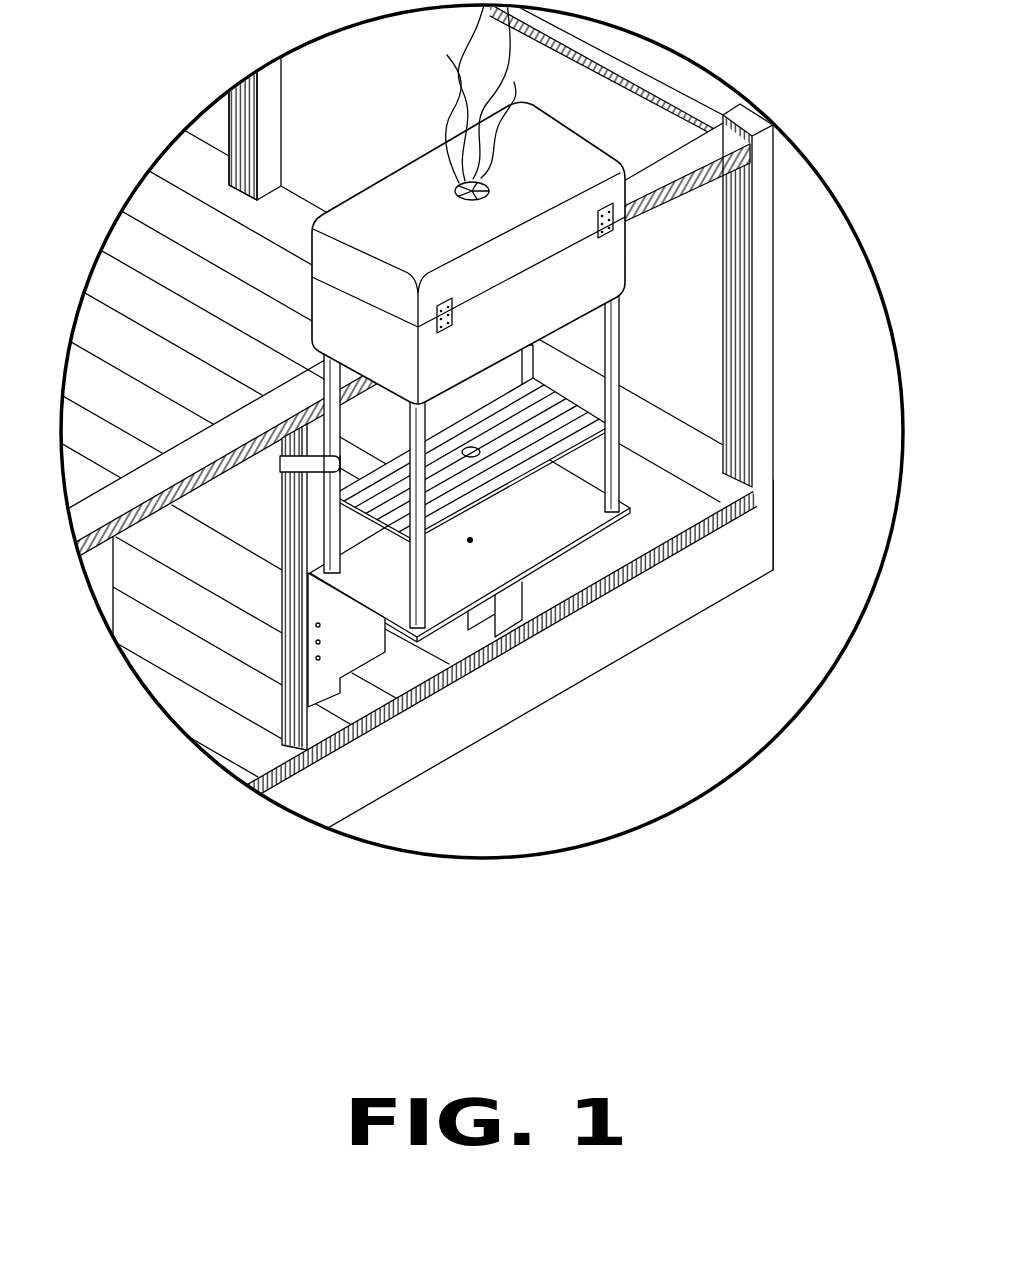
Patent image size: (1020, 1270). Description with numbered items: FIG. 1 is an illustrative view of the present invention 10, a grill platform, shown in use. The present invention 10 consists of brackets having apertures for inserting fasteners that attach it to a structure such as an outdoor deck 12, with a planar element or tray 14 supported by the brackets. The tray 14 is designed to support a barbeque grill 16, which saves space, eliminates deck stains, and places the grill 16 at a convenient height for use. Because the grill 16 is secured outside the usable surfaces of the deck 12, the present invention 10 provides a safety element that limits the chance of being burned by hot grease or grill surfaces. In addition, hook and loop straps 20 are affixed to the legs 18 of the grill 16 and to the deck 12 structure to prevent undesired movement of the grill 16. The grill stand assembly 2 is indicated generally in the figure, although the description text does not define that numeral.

The grill stand assembly 2 is at (542, 572).
The present invention 10 is at (703, 327).
The deck 12 is at (758, 348).
The tray 14 is at (533, 520).
The grill 16 is at (583, 166).
The legs 18 is at (615, 468).
The straps 20 is at (280, 460).